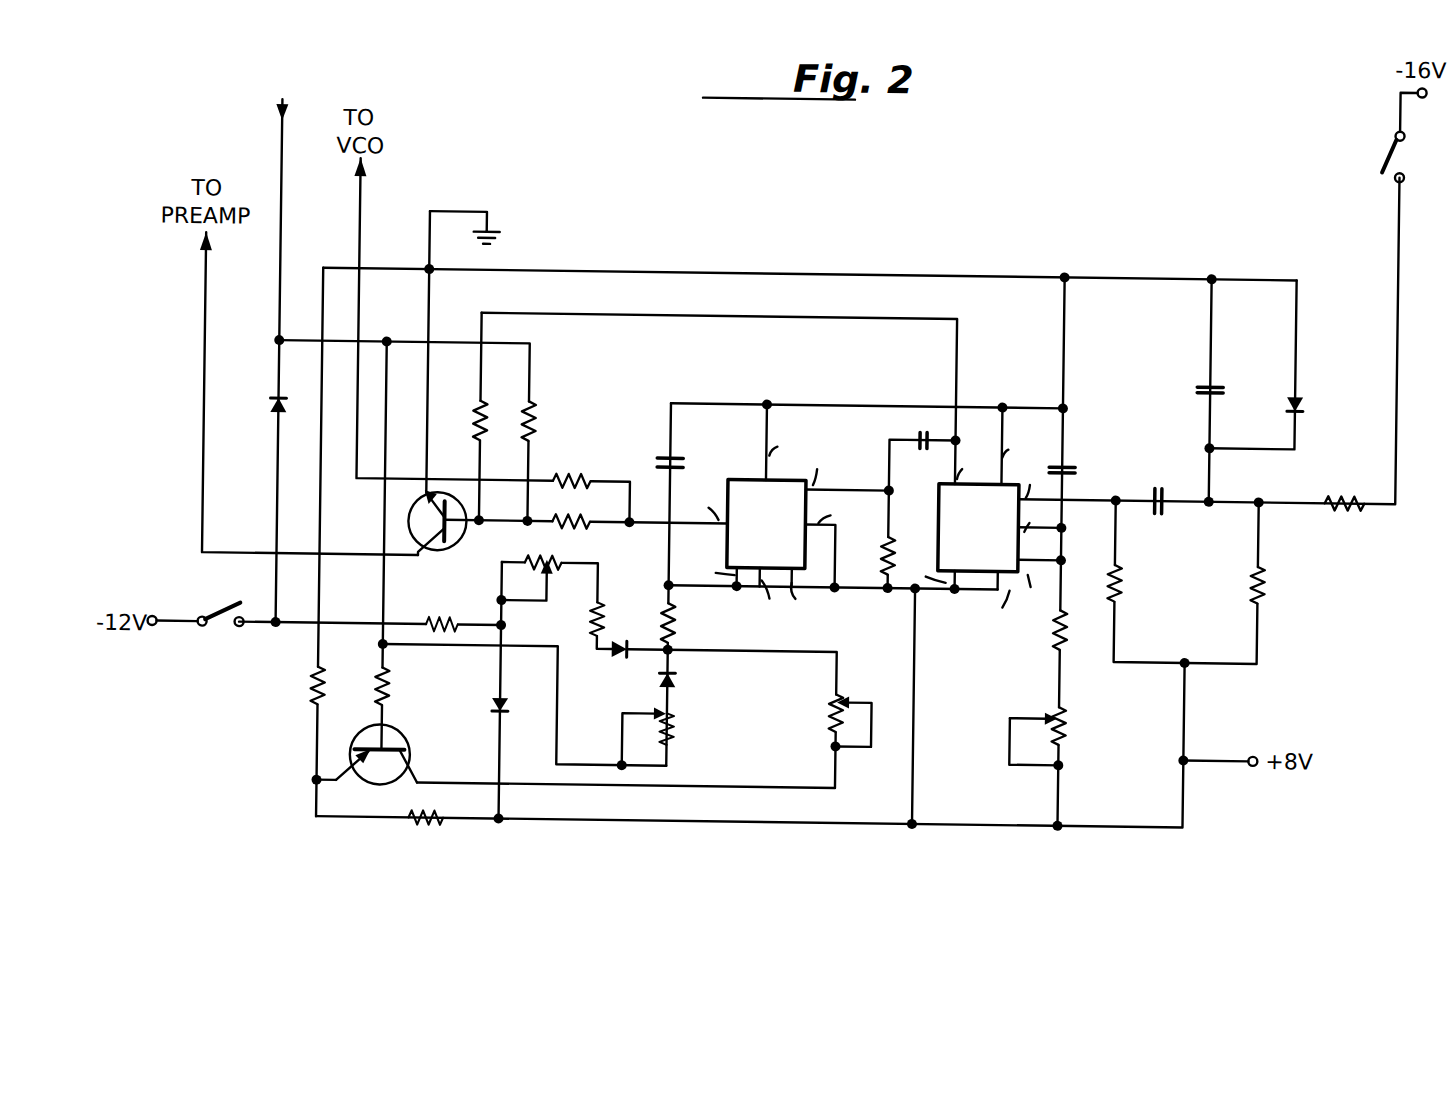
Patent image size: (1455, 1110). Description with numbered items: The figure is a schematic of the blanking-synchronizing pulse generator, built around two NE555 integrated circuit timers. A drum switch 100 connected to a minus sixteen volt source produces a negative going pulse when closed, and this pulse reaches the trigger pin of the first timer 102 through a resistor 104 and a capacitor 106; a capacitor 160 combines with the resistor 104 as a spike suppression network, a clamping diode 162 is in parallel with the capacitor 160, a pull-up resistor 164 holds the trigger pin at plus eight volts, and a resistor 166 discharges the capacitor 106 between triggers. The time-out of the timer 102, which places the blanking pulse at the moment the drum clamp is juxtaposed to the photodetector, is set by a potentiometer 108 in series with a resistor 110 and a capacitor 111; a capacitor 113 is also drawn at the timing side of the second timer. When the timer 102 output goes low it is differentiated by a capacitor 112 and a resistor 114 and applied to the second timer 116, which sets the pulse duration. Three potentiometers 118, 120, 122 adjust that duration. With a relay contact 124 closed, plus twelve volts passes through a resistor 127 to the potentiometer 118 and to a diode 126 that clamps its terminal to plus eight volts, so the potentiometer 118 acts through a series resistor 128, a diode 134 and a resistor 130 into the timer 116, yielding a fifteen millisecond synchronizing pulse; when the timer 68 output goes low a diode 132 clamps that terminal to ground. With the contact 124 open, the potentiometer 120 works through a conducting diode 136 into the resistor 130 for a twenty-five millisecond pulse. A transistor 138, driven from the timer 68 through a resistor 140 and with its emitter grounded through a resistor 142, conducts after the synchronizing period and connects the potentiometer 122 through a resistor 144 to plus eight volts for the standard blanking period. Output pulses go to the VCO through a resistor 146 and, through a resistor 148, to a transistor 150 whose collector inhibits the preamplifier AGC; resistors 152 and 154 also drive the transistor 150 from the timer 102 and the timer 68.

The timer 68 is at (270, 187).
The drum switch 100 is at (1382, 153).
The timer 102 is at (942, 492).
The resistor 104 is at (1340, 505).
The capacitor 106 is at (1158, 484).
The potentiometer 108 is at (1068, 724).
The resistor 110 is at (1050, 634).
The capacitor 111 is at (1068, 457).
The capacitor 112 is at (915, 432).
The capacitor 113 is at (665, 455).
The resistor 114 is at (893, 552).
The second IC timer 116 is at (752, 478).
The potentiometer 118 is at (546, 560).
The potentiometer 120 is at (680, 722).
The potentiometer 122 is at (830, 702).
The relay contact 124 is at (224, 611).
The diode 126 is at (509, 700).
The resistor 127 is at (437, 618).
The series resistor 128 is at (607, 612).
The resistor 130 is at (685, 626).
The diode 132 is at (274, 409).
The diode 134 is at (616, 662).
The diode 136 is at (680, 678).
The transistor 138 is at (398, 742).
The resistor 140 is at (391, 688).
The resistor 142 is at (308, 686).
The resistor 144 is at (438, 825).
The resistor 146 is at (572, 478).
The resistor 148 is at (578, 521).
The transistor 150 is at (455, 540).
The resistor 152 is at (476, 420).
The resistor 154 is at (536, 412).
The capacitor 160 is at (1218, 378).
The clamping diode 162 is at (1300, 396).
The resistor 164 is at (1124, 580).
The resistor 166 is at (1268, 581).